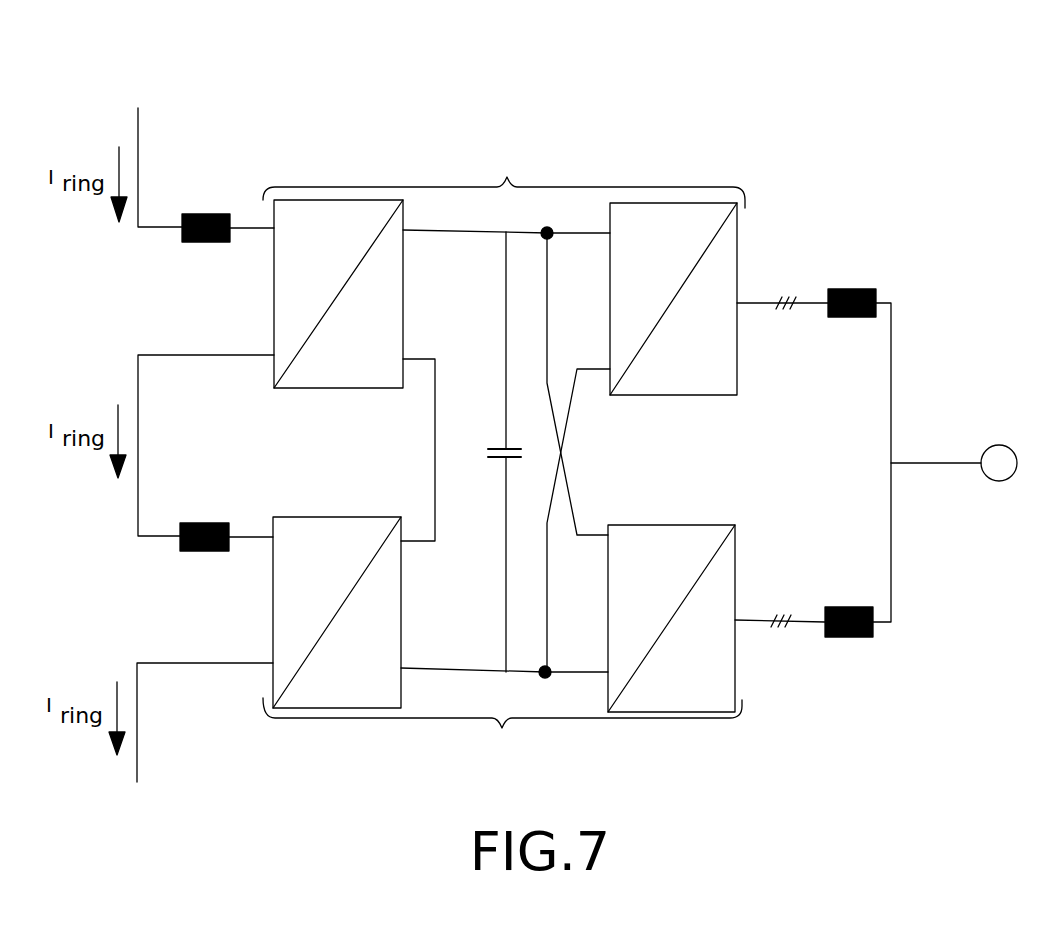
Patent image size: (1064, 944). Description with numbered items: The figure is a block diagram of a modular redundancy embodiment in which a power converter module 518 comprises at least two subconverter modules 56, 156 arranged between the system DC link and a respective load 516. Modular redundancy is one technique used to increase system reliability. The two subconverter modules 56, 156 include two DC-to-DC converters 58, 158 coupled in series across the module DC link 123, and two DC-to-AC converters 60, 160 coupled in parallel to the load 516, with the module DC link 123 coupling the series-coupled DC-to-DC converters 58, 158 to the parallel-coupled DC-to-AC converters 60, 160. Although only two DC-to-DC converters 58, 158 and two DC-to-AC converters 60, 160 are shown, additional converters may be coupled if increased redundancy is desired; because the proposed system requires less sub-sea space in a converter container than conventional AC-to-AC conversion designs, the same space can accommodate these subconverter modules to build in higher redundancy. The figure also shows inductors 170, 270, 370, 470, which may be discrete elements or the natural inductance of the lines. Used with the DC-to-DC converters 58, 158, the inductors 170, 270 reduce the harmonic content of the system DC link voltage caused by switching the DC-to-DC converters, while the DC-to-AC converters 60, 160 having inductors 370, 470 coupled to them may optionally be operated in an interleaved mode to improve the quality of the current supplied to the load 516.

The inductor 170 is at (202, 214).
The inductor 270 is at (200, 523).
The inductor 370 is at (848, 289).
The inductor 470 is at (845, 607).
The DC-to-DC converter 58 is at (274, 292).
The DC-to-DC converter 158 is at (273, 605).
The DC-to-AC converter 60 is at (610, 307).
The DC-to-AC converter 160 is at (608, 603).
The subconverter module 56 is at (504, 176).
The subconverter module 156 is at (502, 729).
The module DC link 123 is at (499, 462).
The load 516 is at (995, 445).
The power converter module 518 is at (671, 155).